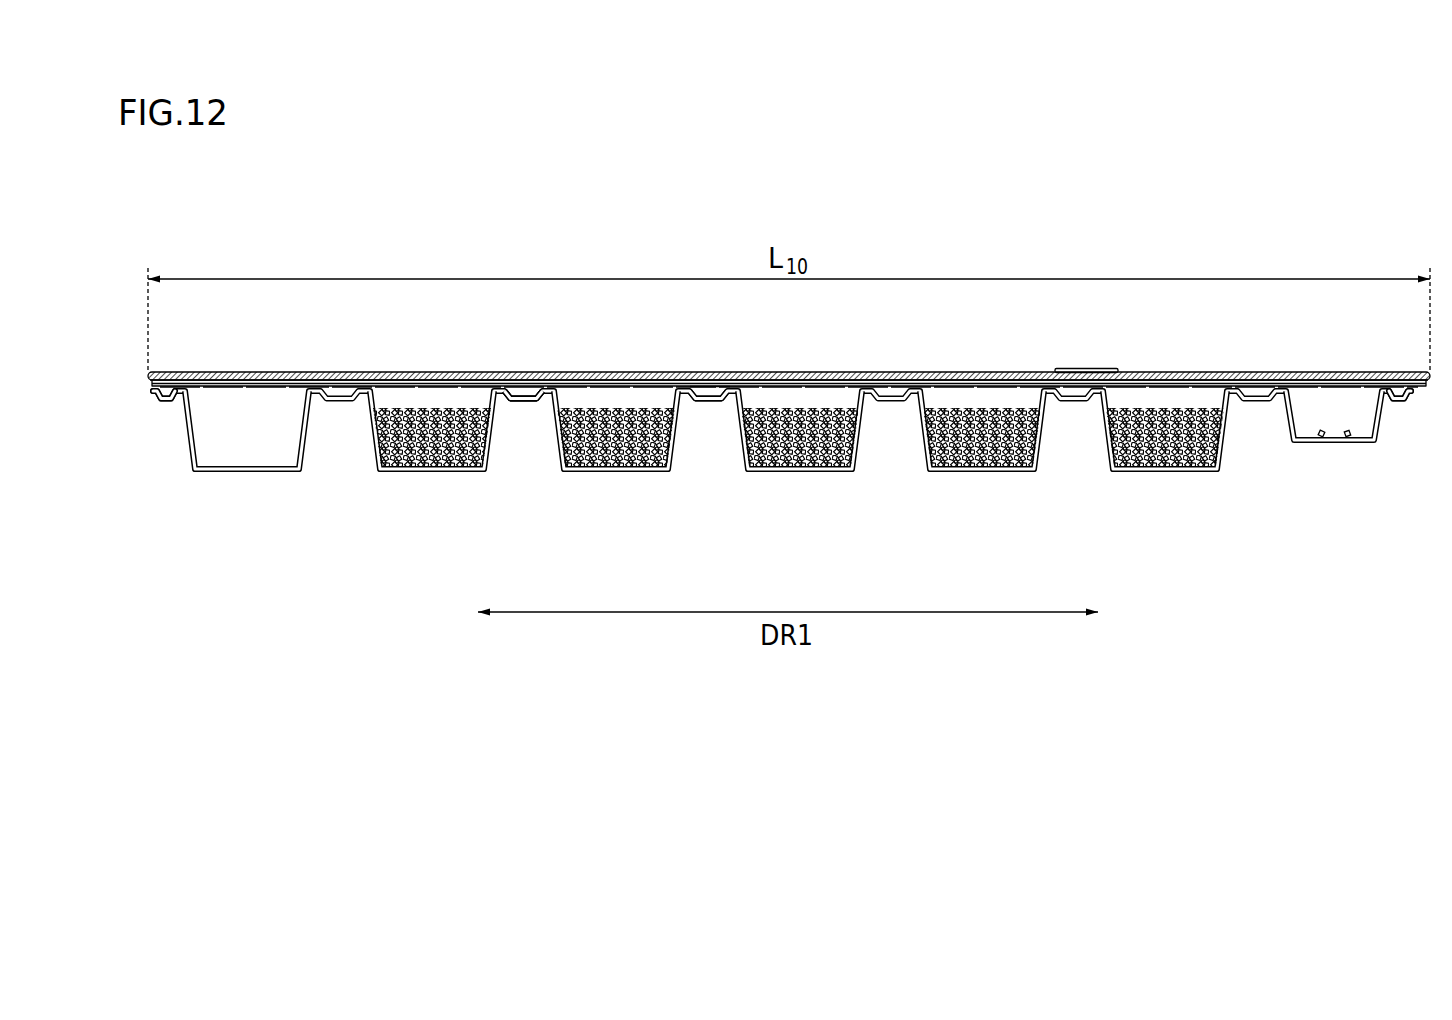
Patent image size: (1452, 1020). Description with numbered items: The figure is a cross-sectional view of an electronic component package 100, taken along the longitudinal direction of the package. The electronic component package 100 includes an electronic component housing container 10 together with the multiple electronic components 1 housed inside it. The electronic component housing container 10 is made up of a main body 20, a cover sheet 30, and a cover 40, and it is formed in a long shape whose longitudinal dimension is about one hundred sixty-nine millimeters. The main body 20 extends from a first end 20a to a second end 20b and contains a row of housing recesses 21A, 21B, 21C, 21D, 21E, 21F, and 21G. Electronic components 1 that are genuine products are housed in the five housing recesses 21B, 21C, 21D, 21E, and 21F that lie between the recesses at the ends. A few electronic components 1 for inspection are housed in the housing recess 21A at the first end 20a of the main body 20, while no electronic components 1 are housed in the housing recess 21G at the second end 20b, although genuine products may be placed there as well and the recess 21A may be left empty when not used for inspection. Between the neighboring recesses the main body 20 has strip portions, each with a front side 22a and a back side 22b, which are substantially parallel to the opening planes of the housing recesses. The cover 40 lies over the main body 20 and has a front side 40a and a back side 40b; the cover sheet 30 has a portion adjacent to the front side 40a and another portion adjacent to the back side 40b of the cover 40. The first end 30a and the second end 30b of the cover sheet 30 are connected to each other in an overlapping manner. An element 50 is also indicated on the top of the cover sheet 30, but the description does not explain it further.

The electronic component package 100 is at (226, 242).
The electronic component housing container 10 is at (1304, 365).
The cover sheet 30 is at (1213, 372).
The first end 30a is at (1118, 376).
The second end 30b is at (1082, 381).
The label/film piece 50 is at (1062, 371).
The cover 40 is at (628, 373).
The front side 40a is at (709, 386).
The back side 40b is at (709, 398).
The main body 20 is at (1258, 398).
The first end 20a is at (1412, 397).
The second end 20b is at (153, 397).
The front side 22a is at (521, 392).
The back side 22b is at (520, 400).
The housing recess 21A is at (1330, 445).
The housing recess 21B is at (1172, 468).
The housing recess 21C is at (990, 472).
The housing recess 21D is at (808, 472).
The housing recess 21E is at (622, 472).
The housing recess 21F is at (440, 472).
The housing recess 21G is at (250, 472).
The electronic components 1 is at (1190, 468).